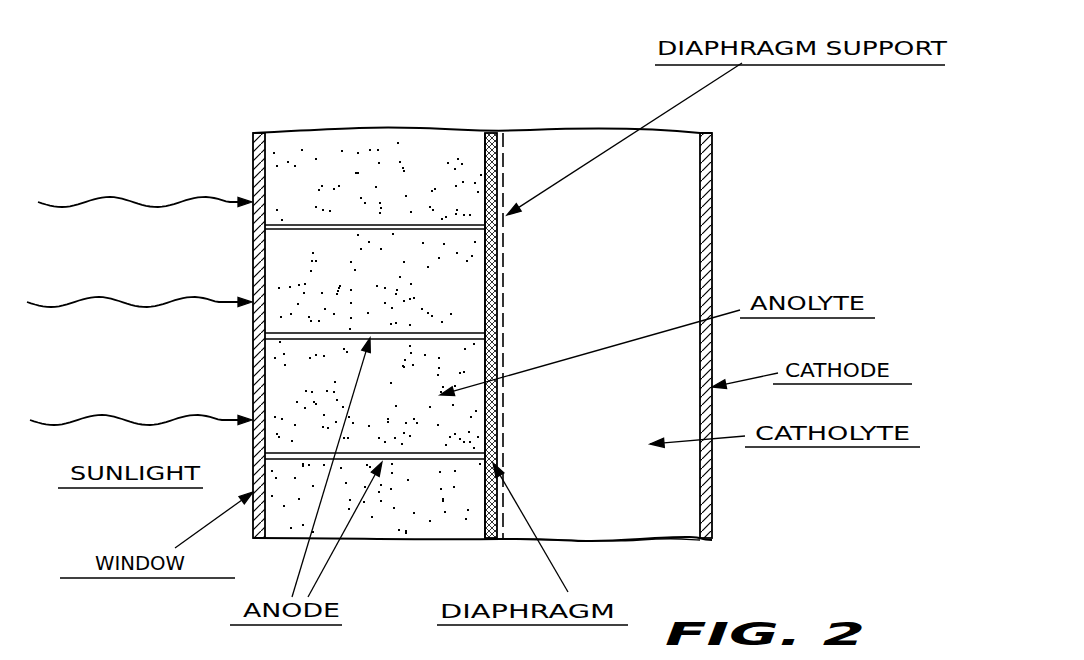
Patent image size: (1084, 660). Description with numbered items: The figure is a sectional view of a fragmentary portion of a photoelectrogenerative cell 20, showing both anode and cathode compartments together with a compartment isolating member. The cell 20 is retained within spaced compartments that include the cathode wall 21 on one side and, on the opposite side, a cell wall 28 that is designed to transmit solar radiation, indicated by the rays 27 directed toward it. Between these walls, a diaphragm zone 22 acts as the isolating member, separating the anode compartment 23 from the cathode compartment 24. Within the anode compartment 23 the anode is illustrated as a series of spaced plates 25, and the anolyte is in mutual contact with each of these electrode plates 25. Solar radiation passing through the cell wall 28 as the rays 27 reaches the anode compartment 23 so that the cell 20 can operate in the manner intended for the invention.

The cell 20 is at (738, 185).
The cathode wall 21 is at (712, 256).
The diaphragm zone 22 is at (492, 132).
The anode compartment 23 is at (378, 132).
The cathode compartment 24 is at (675, 148).
The spaced plates 25 is at (298, 222).
The rays 27 is at (130, 176).
The cell wall 28 is at (253, 350).